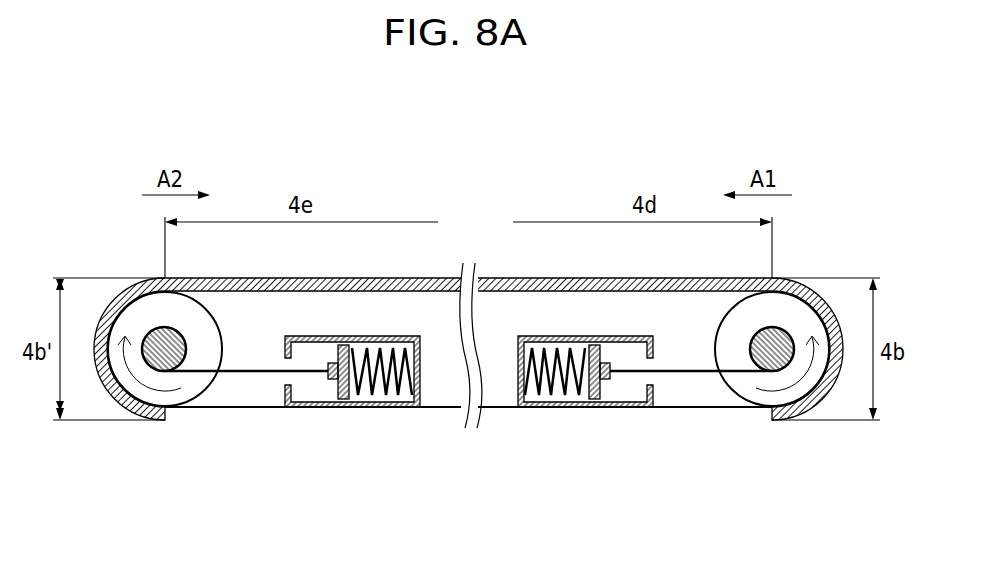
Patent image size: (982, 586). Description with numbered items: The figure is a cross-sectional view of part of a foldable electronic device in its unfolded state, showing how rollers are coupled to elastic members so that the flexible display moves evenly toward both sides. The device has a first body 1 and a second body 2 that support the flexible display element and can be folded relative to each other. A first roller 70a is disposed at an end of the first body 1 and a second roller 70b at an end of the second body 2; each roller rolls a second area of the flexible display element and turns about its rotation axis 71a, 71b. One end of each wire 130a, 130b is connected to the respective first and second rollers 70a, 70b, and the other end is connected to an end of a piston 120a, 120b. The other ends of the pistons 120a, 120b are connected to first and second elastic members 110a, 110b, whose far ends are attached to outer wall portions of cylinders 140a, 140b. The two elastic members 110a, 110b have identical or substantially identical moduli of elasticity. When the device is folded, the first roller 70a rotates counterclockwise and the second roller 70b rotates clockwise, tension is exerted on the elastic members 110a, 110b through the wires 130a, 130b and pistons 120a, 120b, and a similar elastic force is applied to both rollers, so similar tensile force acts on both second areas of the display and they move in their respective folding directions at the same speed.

The first body 1 is at (690, 398).
The second body 2 is at (228, 398).
The first roller 70a is at (755, 399).
The second roller 70b is at (178, 403).
The rotation axis of first roller 71a is at (773, 371).
The rotation axis of second roller 71b is at (156, 361).
The first elastic member 110a is at (547, 408).
The second elastic member 110b is at (386, 408).
The piston 120a is at (592, 408).
The piston 120b is at (340, 408).
The wire 130a is at (667, 373).
The wire 130b is at (265, 373).
The cylinder 140a is at (527, 408).
The cylinder 140b is at (407, 408).